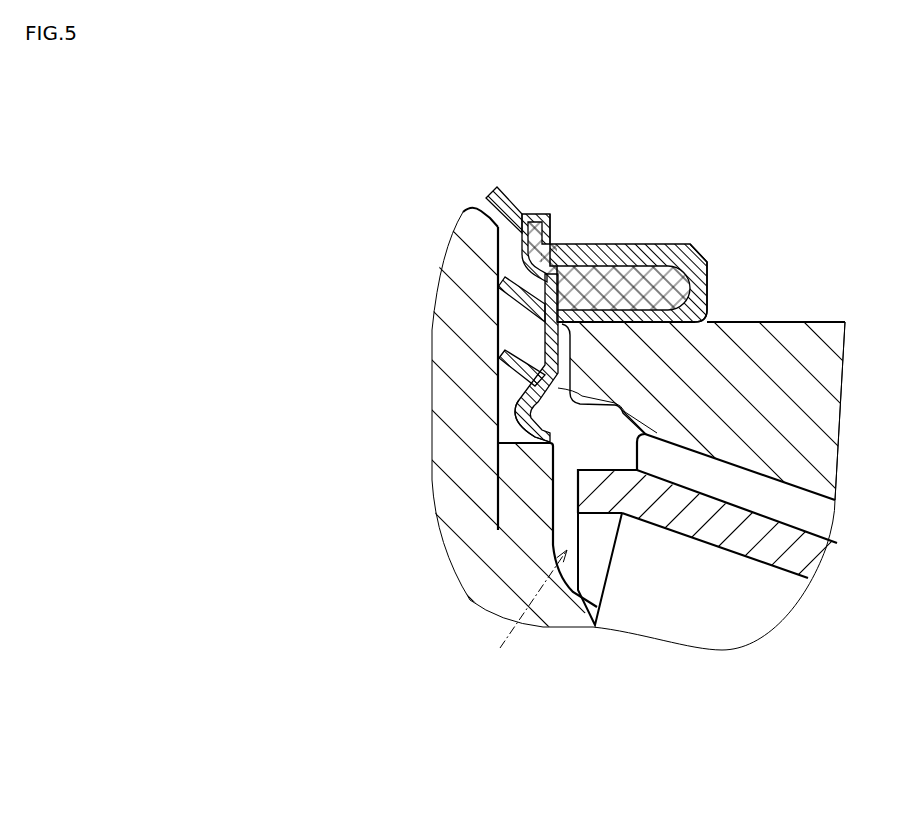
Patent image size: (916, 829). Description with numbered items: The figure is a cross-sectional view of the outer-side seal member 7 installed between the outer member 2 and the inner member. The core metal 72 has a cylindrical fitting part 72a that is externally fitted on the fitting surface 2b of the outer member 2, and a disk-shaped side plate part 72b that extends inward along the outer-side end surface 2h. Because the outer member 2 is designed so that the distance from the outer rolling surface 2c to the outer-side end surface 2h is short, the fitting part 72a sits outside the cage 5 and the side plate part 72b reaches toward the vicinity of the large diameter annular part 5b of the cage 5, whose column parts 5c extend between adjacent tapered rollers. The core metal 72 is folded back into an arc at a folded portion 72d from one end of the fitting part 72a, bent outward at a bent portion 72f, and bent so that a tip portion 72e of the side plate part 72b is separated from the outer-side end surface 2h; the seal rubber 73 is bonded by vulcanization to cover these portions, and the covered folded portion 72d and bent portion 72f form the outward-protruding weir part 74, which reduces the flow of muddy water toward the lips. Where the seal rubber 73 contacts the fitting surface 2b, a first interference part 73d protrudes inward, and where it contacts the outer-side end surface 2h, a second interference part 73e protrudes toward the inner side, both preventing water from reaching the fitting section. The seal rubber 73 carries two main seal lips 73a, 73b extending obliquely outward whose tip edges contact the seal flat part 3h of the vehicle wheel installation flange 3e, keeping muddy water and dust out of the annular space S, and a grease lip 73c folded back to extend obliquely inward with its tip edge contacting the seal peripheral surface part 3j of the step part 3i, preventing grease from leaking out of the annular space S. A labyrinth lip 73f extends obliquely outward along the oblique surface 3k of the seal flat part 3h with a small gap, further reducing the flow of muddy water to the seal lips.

The outer member 2 is at (700, 353).
The fitting surface 2b is at (735, 318).
The outer rolling surface 2c is at (765, 470).
The outer-side end surface 2h is at (574, 373).
The vehicle wheel installation flange 3e is at (432, 283).
The seal flat part 3h is at (498, 289).
The step part 3i is at (498, 483).
The seal peripheral surface part 3j is at (554, 430).
The oblique surface 3k is at (478, 210).
The cage 5 is at (678, 524).
The large diameter annular part 5b is at (556, 530).
The column parts 5c is at (807, 533).
The outer-side seal member 7 is at (297, 215).
The core metal 72 is at (504, 234).
The fitting part 72a is at (534, 238).
The side plate part 72b is at (550, 268).
The folded portion 72d is at (678, 275).
The tip portion 72e is at (632, 300).
The bent portion 72f is at (554, 228).
The seal rubber 73 is at (509, 297).
The seal lip 73a is at (520, 306).
The seal lip 73b is at (520, 372).
The seal lip 73c is at (528, 433).
The first interference part 73d is at (670, 327).
The second interference part 73e is at (590, 393).
The labyrinth lip 73f is at (492, 190).
The weir part 74 is at (533, 194).
The annular space S is at (529, 610).